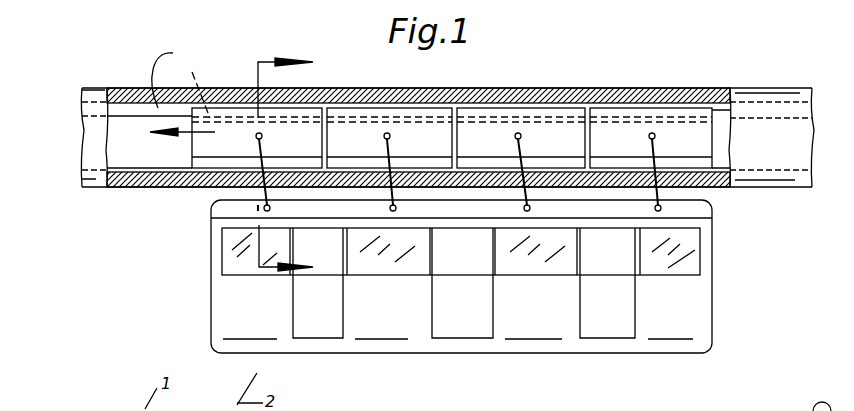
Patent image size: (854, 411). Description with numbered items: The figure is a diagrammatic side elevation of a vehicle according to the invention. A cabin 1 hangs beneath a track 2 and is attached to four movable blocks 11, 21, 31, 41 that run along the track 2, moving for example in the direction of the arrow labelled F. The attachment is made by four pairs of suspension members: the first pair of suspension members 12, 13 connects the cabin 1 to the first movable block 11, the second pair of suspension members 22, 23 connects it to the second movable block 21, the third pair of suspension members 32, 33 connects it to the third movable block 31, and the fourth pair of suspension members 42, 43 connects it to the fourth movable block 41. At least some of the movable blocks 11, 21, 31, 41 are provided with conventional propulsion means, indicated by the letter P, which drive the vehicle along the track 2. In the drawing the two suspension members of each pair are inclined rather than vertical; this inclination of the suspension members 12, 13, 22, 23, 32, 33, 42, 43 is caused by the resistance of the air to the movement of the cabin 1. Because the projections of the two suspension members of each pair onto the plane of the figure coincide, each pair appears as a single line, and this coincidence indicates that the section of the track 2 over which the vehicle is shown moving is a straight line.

The cabin 1 is at (211, 277).
The track 2 is at (100, 207).
The movable block 11 is at (285, 122).
The suspension member 12 is at (262, 139).
The suspension member 13 is at (256, 139).
The movable block 21 is at (410, 123).
The suspension member 22 is at (390, 139).
The suspension member 23 is at (384, 139).
The movable block 31 is at (540, 127).
The suspension member 32 is at (521, 139).
The suspension member 33 is at (515, 139).
The movable block 41 is at (615, 130).
The suspension member 42 is at (655, 139).
The suspension member 43 is at (649, 139).